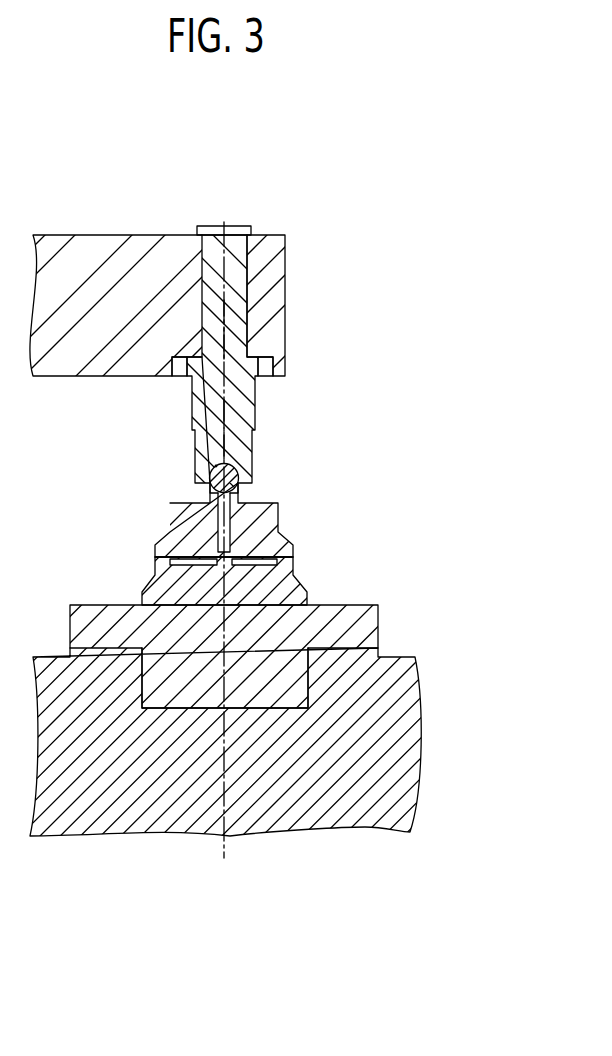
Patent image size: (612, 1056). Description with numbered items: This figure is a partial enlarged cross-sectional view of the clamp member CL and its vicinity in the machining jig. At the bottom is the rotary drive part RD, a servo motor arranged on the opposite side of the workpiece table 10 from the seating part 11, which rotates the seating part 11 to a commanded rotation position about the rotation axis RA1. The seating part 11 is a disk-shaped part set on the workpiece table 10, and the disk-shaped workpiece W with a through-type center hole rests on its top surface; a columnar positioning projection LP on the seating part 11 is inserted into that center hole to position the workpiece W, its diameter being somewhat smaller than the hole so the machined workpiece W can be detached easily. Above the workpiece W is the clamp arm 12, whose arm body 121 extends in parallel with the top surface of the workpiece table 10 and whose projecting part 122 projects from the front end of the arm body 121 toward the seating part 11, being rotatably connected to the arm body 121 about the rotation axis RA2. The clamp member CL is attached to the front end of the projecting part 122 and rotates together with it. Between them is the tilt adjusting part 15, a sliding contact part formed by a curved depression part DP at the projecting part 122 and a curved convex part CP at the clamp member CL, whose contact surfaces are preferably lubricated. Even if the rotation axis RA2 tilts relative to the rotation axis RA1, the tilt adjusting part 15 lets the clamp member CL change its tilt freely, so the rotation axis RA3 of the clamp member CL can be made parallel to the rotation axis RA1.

The clamp arm 12 is at (312, 208).
The arm body 121 is at (88, 253).
The projecting part 122 is at (257, 397).
The tilt adjusting part 15 is at (252, 496).
The curved convex part CP is at (232, 468).
The curved depression part DP is at (216, 466).
The clamp member CL is at (210, 493).
The workpiece W is at (278, 518).
The seating part 11 is at (297, 563).
The positioning projection LP is at (222, 560).
The workpiece table 10 is at (380, 625).
The rotary drive part RD is at (390, 763).
The rotation axis RA1 is at (226, 782).
The rotation axis RA2 is at (223, 352).
The rotation axis RA3 is at (253, 437).